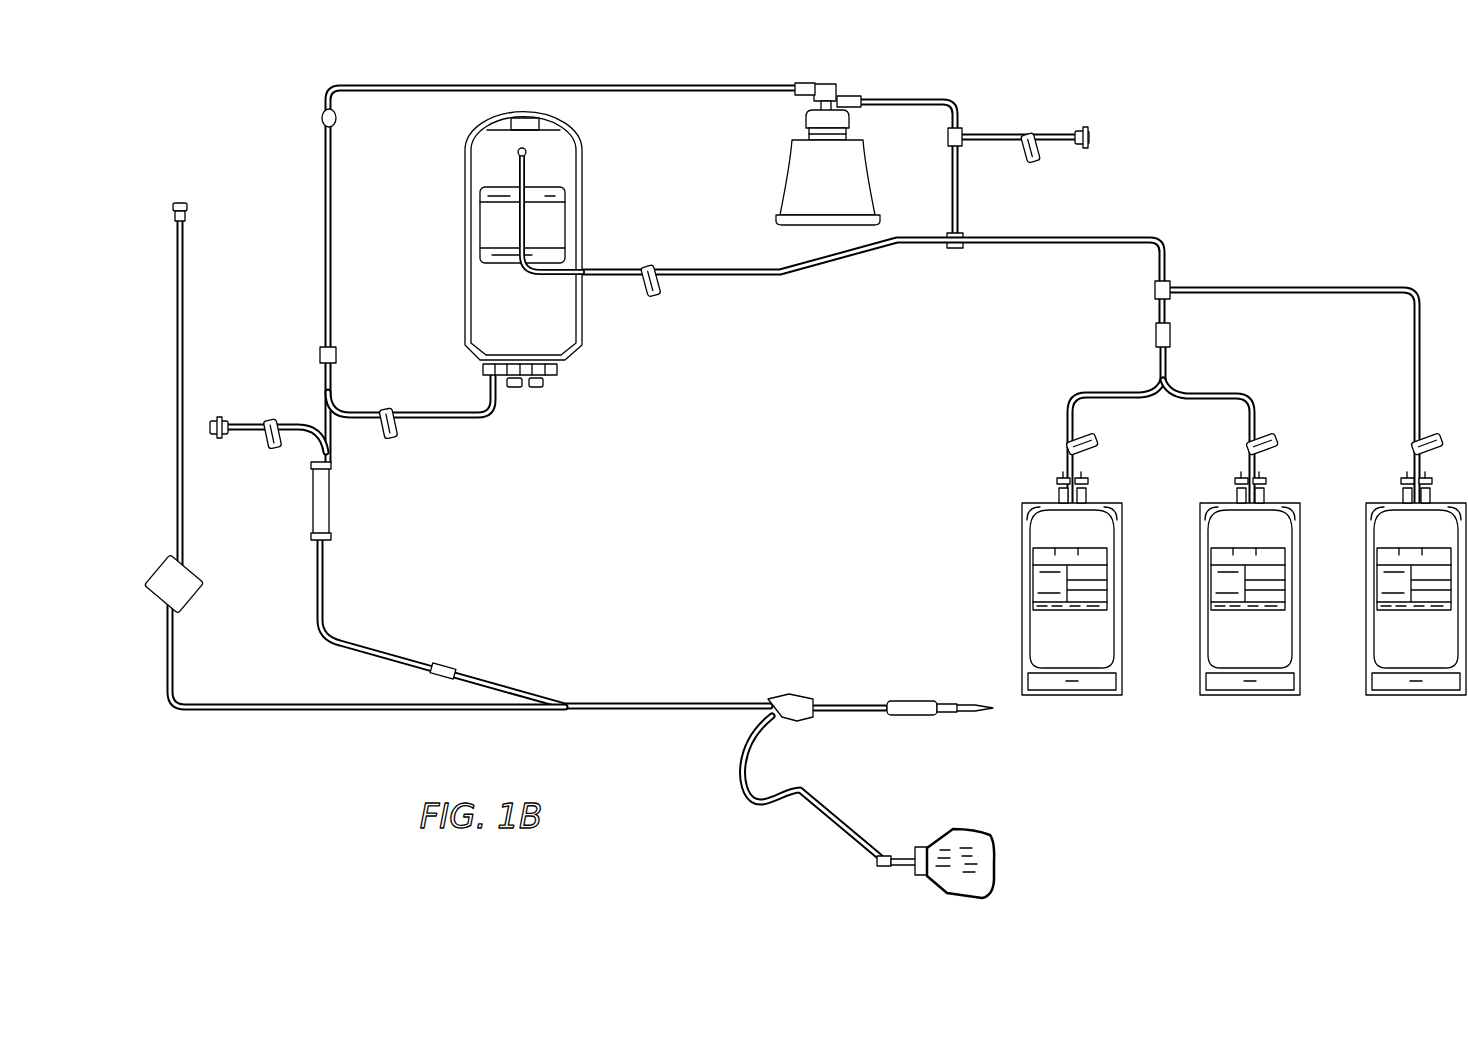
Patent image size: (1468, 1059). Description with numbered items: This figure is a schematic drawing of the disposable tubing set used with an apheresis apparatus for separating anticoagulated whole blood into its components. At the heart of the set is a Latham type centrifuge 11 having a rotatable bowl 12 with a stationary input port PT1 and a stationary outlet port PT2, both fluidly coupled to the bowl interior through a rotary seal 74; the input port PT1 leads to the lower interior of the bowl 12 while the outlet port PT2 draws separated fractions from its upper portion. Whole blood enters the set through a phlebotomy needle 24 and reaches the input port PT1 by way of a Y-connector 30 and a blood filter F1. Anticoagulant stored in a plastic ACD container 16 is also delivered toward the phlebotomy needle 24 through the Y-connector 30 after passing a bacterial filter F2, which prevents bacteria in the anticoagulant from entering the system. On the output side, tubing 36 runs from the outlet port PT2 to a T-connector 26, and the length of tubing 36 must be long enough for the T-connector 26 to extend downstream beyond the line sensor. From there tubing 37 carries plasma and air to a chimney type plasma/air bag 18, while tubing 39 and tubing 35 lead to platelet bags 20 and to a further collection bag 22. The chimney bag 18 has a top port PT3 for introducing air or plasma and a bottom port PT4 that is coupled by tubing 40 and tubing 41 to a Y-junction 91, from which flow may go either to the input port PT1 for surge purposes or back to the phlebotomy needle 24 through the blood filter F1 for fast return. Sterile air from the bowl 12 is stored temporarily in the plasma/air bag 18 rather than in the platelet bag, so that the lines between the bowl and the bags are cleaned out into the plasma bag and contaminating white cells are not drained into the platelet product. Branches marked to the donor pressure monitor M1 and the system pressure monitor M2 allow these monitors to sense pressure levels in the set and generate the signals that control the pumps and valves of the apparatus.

The centrifuge 11 is at (814, 154).
The rotatable bowl 12 is at (878, 188).
The anticoagulant container 16 is at (208, 178).
The plasma/air bag 18 is at (557, 236).
The platelet bag 20 is at (1087, 697).
The collection bag 22 is at (1400, 697).
The phlebotomy needle 24 is at (977, 716).
The T-connector 26 is at (962, 130).
The Y-connector 30 is at (803, 697).
The tubing line 35 is at (1253, 285).
The tubing 36 is at (918, 98).
The tubing 37 is at (813, 266).
The tubing 39 is at (1220, 393).
The tubing line 40 is at (446, 419).
The tubing line 41 is at (456, 84).
The rotary seal 74 is at (815, 130).
The Y-junction 91 is at (338, 118).
The input port PT1 is at (807, 84).
The outlet port PT2 is at (850, 95).
The top port PT3 is at (582, 207).
The bottom port PT4 is at (498, 388).
The blood filter F1 is at (330, 514).
The bacterial filter F2 is at (197, 598).
The donor pressure monitor M1 is at (220, 403).
The system pressure monitor M2 is at (1062, 160).